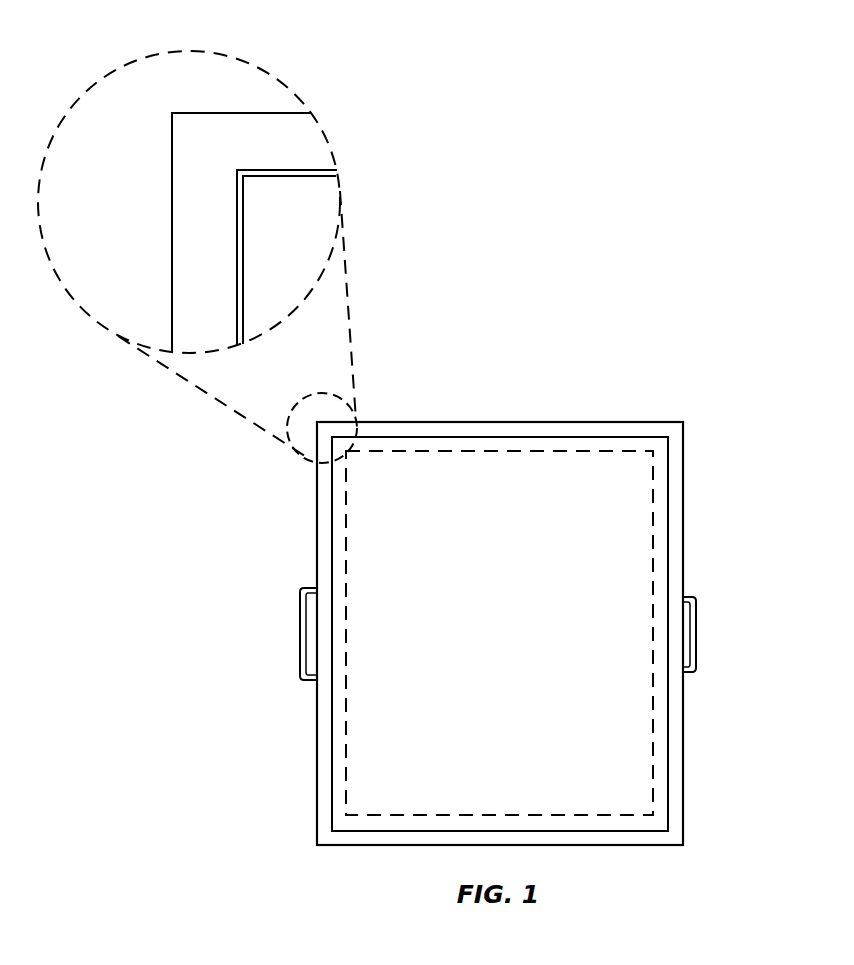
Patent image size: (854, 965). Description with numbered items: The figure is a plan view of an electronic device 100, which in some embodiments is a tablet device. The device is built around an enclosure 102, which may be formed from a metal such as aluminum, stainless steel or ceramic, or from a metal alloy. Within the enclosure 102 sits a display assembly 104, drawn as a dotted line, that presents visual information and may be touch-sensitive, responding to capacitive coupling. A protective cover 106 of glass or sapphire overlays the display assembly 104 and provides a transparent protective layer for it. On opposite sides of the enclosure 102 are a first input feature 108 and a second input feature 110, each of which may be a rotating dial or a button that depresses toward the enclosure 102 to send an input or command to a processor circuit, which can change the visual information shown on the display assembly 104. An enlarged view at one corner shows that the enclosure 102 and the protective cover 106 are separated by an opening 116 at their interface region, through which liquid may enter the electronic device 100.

The electronic device 100 is at (577, 320).
The enclosure 102 is at (317, 505).
The display assembly 104 is at (346, 730).
The protective cover 106 is at (392, 436).
The first input feature 108 is at (696, 630).
The second input feature 110 is at (300, 641).
The opening 116 is at (252, 160).